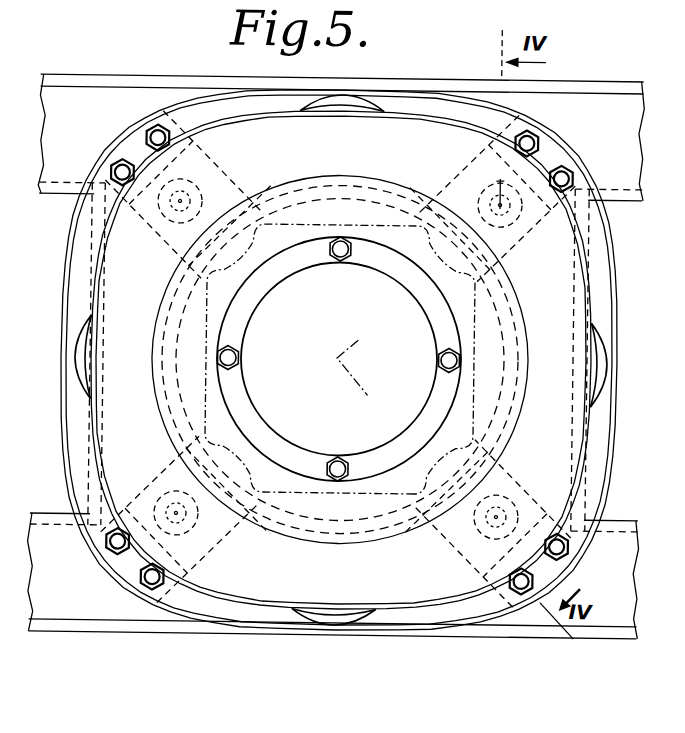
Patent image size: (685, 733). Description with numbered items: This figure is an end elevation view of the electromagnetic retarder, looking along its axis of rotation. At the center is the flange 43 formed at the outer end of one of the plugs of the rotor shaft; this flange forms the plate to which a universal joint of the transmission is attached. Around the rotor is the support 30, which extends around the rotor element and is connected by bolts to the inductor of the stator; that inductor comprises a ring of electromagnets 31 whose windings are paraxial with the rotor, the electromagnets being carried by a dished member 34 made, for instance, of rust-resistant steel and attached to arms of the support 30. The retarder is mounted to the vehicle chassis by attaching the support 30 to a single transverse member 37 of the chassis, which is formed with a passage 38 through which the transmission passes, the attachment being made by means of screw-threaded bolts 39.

The support 30 is at (214, 185).
The electromagnets 31 is at (300, 108).
The dished member 34 is at (615, 272).
The transverse member 37 is at (163, 70).
The passage 38 is at (485, 275).
The screw-threaded bolts 39 is at (478, 194).
The flange 43 is at (295, 453).